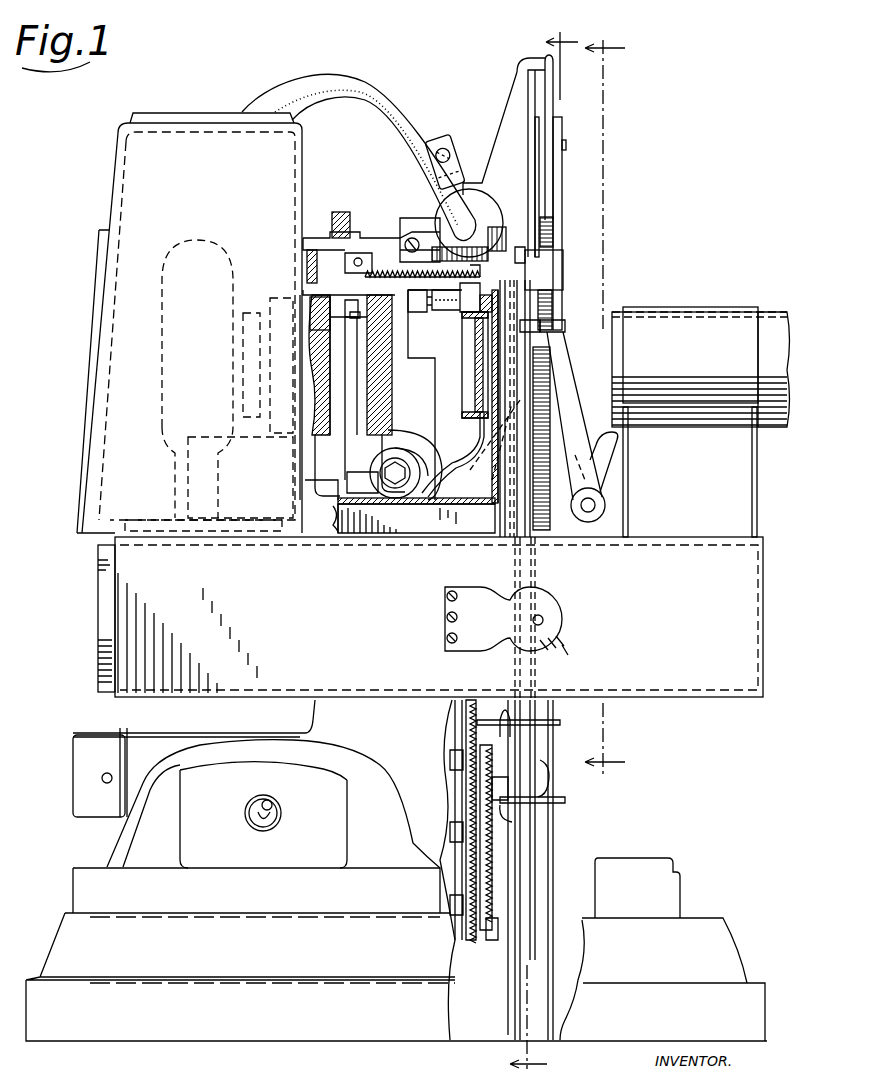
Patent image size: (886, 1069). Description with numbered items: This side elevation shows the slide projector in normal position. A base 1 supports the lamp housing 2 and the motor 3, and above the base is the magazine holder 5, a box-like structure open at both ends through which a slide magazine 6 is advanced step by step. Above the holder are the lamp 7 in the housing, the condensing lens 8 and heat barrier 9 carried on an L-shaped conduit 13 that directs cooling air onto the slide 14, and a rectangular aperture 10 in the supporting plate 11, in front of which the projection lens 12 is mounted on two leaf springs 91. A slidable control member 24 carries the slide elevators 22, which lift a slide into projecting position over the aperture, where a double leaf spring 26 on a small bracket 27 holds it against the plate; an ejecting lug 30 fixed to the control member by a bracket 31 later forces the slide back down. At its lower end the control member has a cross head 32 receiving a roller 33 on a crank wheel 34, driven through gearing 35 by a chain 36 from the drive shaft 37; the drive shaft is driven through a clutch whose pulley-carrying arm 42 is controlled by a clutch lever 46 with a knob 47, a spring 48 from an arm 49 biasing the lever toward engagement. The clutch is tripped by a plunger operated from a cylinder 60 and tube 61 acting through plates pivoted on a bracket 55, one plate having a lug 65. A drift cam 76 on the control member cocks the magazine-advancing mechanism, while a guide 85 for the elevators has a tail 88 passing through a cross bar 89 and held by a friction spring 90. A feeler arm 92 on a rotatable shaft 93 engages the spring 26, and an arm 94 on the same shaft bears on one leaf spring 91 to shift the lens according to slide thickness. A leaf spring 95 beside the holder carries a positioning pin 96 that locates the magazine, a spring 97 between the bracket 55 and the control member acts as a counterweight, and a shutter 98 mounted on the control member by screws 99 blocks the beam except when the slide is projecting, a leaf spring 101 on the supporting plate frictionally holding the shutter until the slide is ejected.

The base 1 is at (86, 1036).
The lamp housing 2 is at (143, 167).
The motor 3 is at (567, 537).
The magazine holder 5 is at (266, 608).
The slide magazine 6 is at (98, 611).
The lamp 7 is at (162, 380).
The condensing lens 8 is at (330, 395).
The heat barrier 9 is at (475, 394).
The rectangular aperture 10 is at (478, 432).
The supporting plate 11 is at (512, 512).
The projection lens 12 is at (692, 328).
The L-shaped conduit 13 is at (382, 537).
The slide 14 is at (488, 480).
The slide elevators 22 is at (513, 672).
The control member 24 is at (540, 712).
The spring 26 is at (487, 408).
The bracket 27 is at (519, 537).
The ejecting lug 30 is at (511, 249).
The bracket 31 is at (548, 266).
The cross head 32 is at (512, 822).
The roller 33 is at (498, 790).
The crank wheel 34 is at (493, 942).
The gearing 35 is at (445, 885).
The chain 36 is at (478, 779).
The drive shaft 37 is at (447, 312).
The arm 42 is at (355, 318).
The clutch lever 46 is at (368, 240).
The knob 47 is at (333, 213).
The spring 48 is at (422, 262).
The arm 49 is at (345, 262).
The bracket 55 is at (513, 94).
The cylinder 60 is at (478, 206).
The tube 61 is at (356, 96).
The lug 65 is at (430, 150).
The drift cam 76 is at (555, 744).
The guide 85 is at (565, 722).
The tail 88 is at (553, 897).
The cross bar 89 is at (565, 800).
The friction spring 90 is at (552, 786).
The leaf springs 91 is at (752, 497).
The feeler arm 92 is at (568, 393).
The rotatable shaft 93 is at (590, 522).
The arm 94 is at (607, 453).
The leaf spring 95 is at (557, 603).
The positioning pin 96 is at (544, 621).
The spring 97 is at (553, 231).
The shutter 98 is at (563, 182).
The screws 99 is at (566, 146).
The leaf spring 101 is at (552, 329).